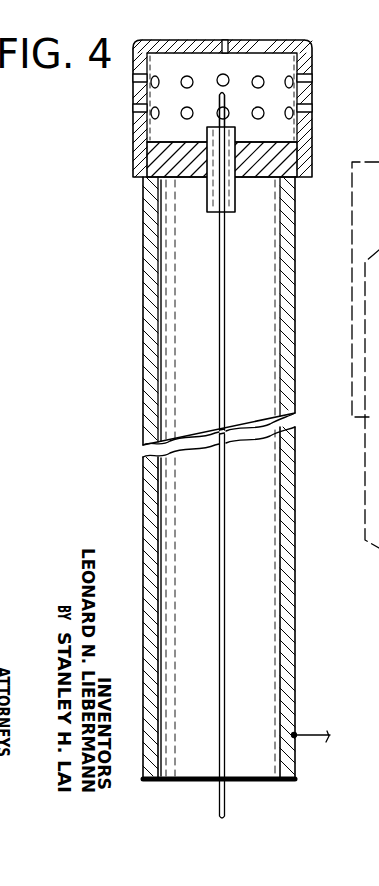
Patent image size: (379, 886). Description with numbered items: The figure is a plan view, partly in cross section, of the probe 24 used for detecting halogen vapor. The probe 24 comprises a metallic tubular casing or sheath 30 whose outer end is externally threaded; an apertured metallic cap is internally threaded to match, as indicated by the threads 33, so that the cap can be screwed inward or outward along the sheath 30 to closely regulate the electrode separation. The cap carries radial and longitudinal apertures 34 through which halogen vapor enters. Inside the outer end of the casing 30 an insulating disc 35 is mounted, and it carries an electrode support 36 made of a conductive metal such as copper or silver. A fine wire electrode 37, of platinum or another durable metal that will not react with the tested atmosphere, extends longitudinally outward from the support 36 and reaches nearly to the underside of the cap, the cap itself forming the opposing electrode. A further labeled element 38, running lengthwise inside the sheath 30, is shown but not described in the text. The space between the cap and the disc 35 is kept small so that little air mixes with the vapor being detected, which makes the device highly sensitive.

The probe 24 is at (143, 378).
The tubular casing or sheath 30 is at (143, 503).
The threads 33 is at (293, 163).
The radial and longitudinal apertures 34 is at (133, 108).
The insulating disc 35 is at (253, 162).
The electrode support 36 is at (228, 198).
The fine wire electrode 37 is at (219, 99).
The electrode wire 38 is at (223, 548).